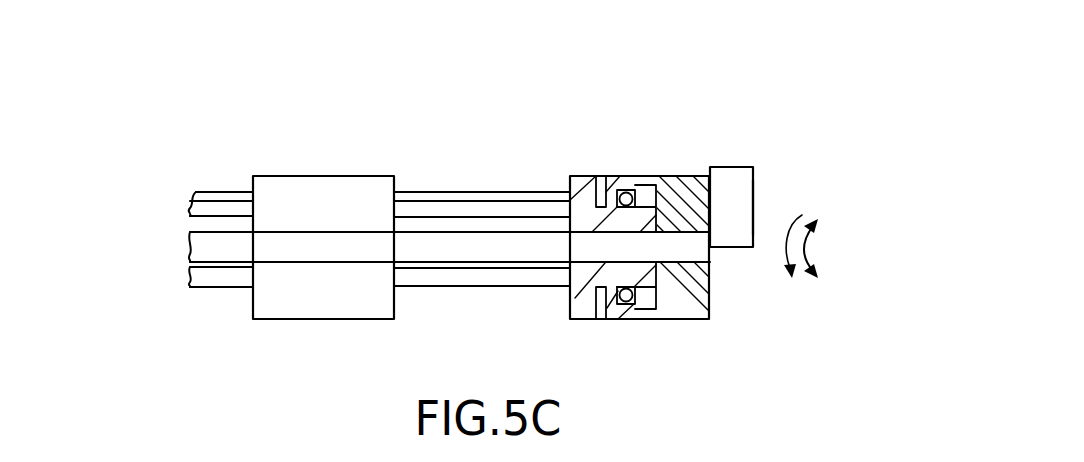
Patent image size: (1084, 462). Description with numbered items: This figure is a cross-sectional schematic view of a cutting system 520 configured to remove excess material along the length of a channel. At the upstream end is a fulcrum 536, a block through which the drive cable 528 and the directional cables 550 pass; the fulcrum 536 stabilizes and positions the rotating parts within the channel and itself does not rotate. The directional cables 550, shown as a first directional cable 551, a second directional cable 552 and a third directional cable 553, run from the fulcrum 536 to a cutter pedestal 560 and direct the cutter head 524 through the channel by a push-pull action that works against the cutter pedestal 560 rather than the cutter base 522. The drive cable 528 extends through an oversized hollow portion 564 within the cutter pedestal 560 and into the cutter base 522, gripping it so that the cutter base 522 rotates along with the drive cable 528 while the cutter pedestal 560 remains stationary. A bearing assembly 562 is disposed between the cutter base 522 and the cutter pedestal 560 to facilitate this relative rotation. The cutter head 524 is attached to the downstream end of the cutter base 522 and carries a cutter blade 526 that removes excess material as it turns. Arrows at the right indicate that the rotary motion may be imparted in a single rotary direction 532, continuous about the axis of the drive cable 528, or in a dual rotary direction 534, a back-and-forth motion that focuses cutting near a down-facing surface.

The cutting system 520 is at (238, 96).
The fulcrum 536 is at (337, 190).
The directional cables 550 is at (425, 200).
The first directional cable 551 is at (453, 200).
The second directional cable 552 is at (543, 200).
The third directional cable 553 is at (490, 275).
The drive cable 528 is at (487, 242).
The cutter base 522 is at (685, 187).
The oversized hollow portion 564 is at (585, 262).
The cutter pedestal 560 is at (583, 310).
The bearing assembly 562 is at (627, 300).
The cutter blade 526 is at (730, 168).
The cutter head 524 is at (750, 198).
The dual rotary direction 534 is at (803, 250).
The single rotary direction 532 is at (787, 256).